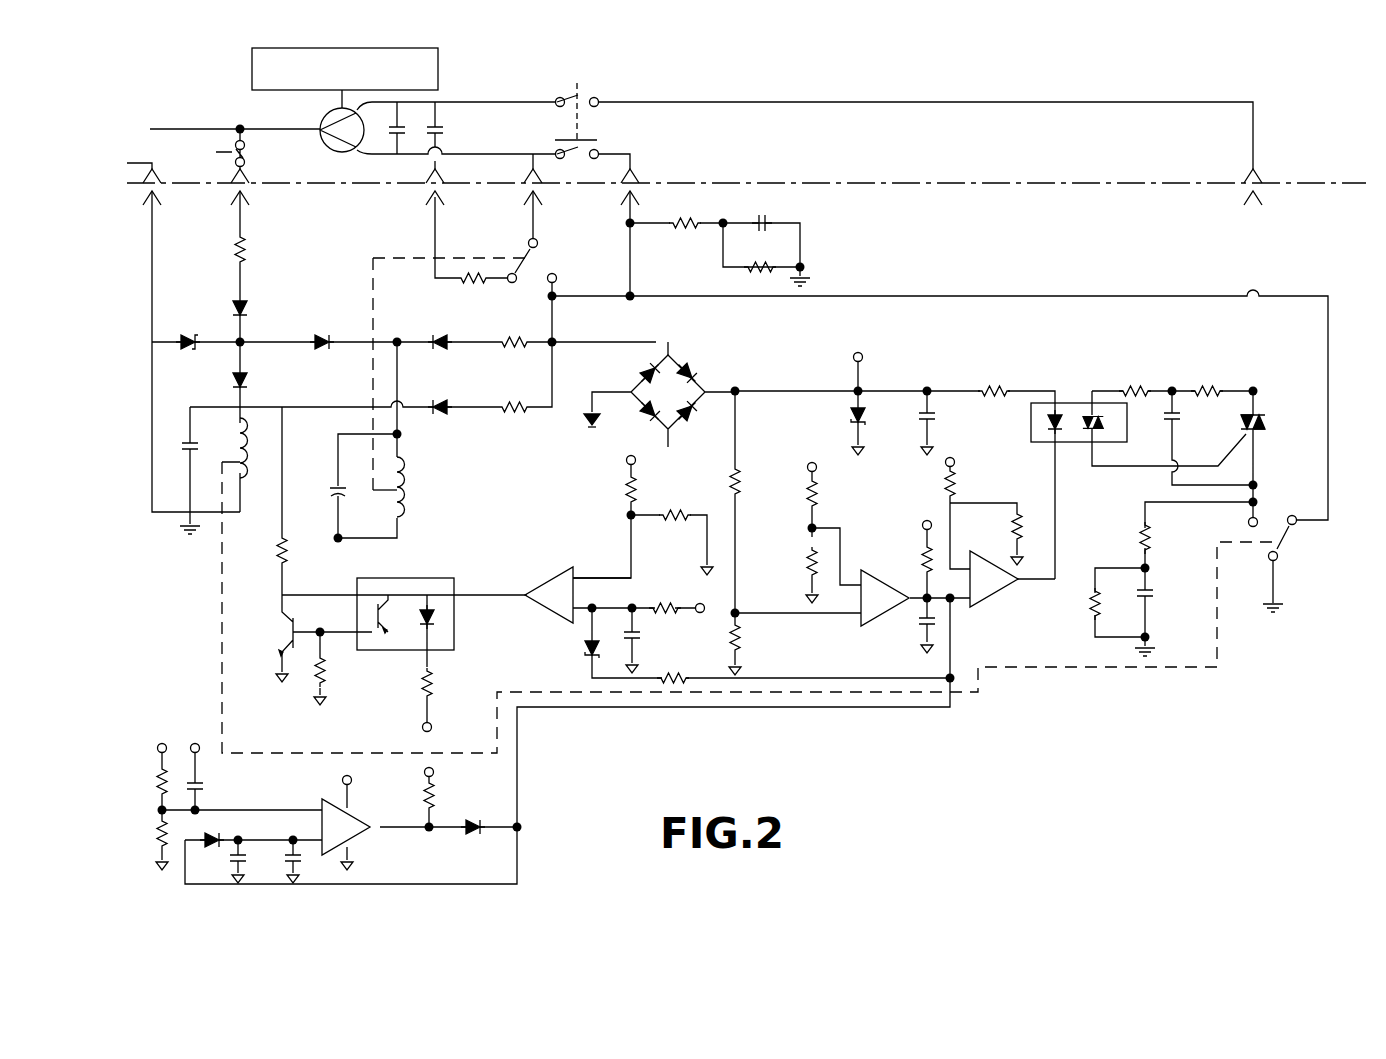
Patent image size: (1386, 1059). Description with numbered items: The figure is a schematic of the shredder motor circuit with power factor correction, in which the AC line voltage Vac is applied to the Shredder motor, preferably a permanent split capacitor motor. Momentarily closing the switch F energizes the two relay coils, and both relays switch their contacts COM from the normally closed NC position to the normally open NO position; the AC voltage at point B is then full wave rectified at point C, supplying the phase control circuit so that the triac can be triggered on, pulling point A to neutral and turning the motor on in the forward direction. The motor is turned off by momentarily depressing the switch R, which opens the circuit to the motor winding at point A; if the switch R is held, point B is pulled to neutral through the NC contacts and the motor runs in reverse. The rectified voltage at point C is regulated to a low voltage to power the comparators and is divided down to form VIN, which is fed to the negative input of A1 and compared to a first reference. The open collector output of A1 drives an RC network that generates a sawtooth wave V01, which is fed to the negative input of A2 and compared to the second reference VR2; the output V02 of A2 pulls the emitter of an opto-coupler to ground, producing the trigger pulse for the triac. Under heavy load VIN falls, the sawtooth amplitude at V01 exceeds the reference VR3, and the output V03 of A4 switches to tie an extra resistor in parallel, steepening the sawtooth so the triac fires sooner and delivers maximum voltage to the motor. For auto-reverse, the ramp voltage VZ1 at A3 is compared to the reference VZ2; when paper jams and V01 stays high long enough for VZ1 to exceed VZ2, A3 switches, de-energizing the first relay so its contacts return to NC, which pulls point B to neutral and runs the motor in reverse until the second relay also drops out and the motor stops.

The shredder motor Shredder is at (345, 69).
The AC line voltage Vac is at (231, 119).
The point A is at (428, 114).
The point B is at (447, 135).
The switch F is at (221, 150).
The switch R is at (578, 116).
The relay common contact COM is at (876, 408).
The normally closed contact NC is at (900, 399).
The normally open contact NO is at (903, 403).
The point C is at (734, 379).
The voltage VZ1 is at (602, 565).
The reference voltage VZ2 is at (639, 599).
The input voltage VIN is at (796, 603).
The comparator A1 is at (885, 598).
The comparator A2 is at (994, 579).
The comparator A3 is at (549, 595).
The comparator A4 is at (346, 827).
The second voltage reference VR2 is at (989, 538).
The voltage reference VR3 is at (291, 808).
The output voltage V01 is at (953, 600).
The output voltage V02 is at (1057, 560).
The output voltage V03 is at (428, 815).